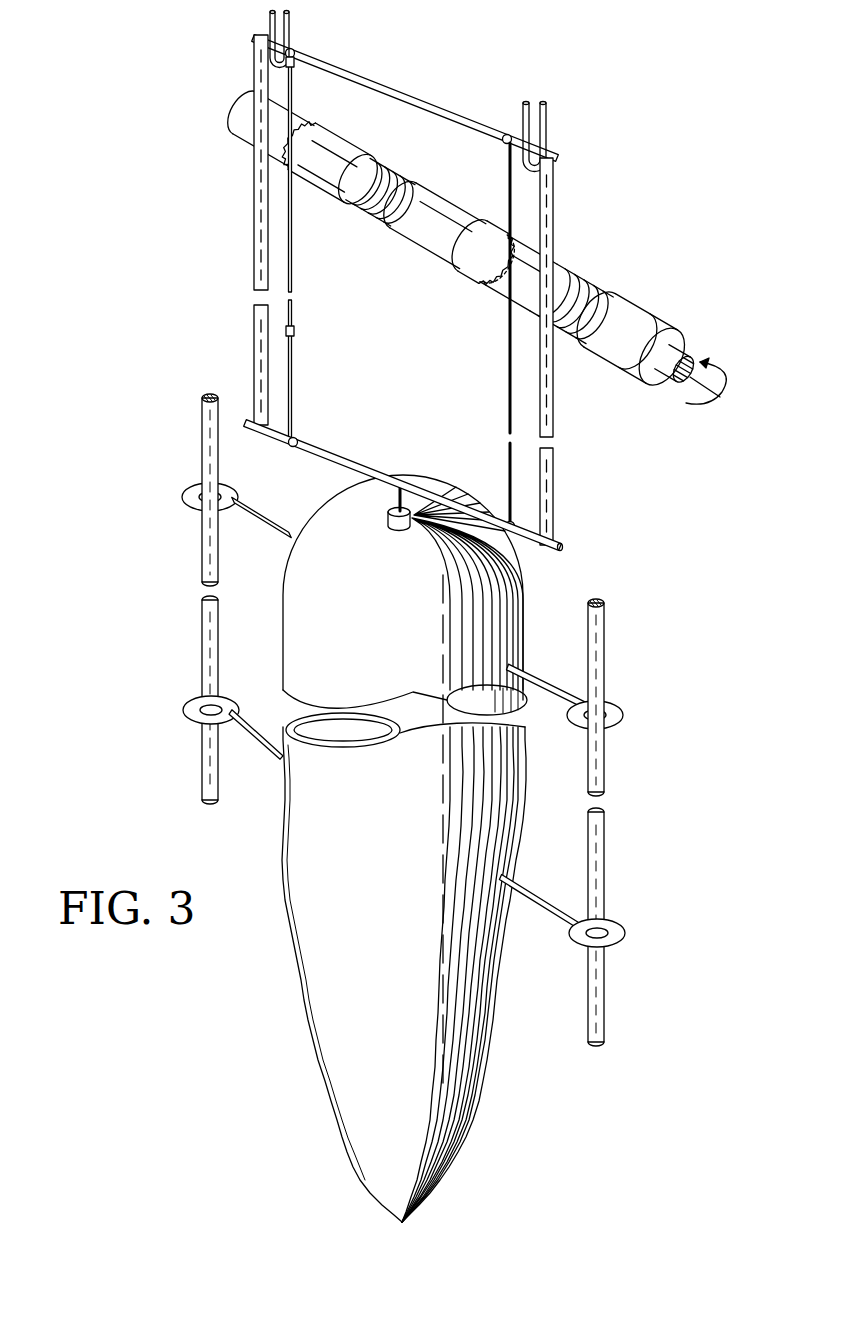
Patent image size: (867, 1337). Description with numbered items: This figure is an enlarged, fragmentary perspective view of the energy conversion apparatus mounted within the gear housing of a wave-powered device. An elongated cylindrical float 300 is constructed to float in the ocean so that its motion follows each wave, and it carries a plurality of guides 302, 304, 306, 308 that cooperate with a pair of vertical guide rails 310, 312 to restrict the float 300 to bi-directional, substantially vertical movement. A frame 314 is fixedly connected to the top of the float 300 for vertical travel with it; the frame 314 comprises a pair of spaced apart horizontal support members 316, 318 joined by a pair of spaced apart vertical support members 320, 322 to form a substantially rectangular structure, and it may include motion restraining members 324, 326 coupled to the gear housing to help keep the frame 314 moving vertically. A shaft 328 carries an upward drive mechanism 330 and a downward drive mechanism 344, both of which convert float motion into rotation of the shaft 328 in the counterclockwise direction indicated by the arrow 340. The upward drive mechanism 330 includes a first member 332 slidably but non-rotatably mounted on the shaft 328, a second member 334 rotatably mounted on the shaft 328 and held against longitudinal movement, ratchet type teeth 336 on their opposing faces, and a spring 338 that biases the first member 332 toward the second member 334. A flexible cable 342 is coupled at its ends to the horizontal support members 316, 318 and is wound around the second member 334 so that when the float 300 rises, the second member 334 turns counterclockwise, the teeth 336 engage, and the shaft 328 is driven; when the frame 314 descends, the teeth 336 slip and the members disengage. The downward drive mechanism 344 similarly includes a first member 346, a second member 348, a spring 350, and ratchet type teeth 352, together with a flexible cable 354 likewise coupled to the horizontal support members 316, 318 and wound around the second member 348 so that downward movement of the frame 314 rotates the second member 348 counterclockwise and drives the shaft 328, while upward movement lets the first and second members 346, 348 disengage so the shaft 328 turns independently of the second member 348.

The elongated cylindrical float 300 is at (284, 851).
The guide 302 is at (623, 718).
The guide 304 is at (620, 940).
The guide 306 is at (183, 494).
The guide 308 is at (186, 713).
The vertical guide rail 310 is at (205, 636).
The vertical guide rail 312 is at (606, 781).
The frame 314 is at (560, 166).
The horizontal support member 316 is at (420, 100).
The horizontal support member 318 is at (326, 471).
The vertical support member 320 is at (555, 489).
The vertical support member 322 is at (253, 219).
The motion restraining member 324 is at (291, 22).
The motion restraining member 326 is at (551, 106).
The shaft 328 is at (670, 382).
The upward drive mechanism 330 is at (471, 250).
The first member 332 is at (556, 260).
The second member 334 is at (452, 205).
The ratchet type teeth 336 is at (497, 264).
The spring 338 is at (582, 269).
The arrow 340 is at (706, 368).
The flexible cable 342 is at (508, 381).
The downward drive mechanism 344 is at (406, 279).
The first member 346 is at (331, 199).
The second member 348 is at (297, 112).
The spring 350 is at (392, 172).
The ratchet type teeth 352 is at (330, 126).
The flexible cable 354 is at (294, 336).